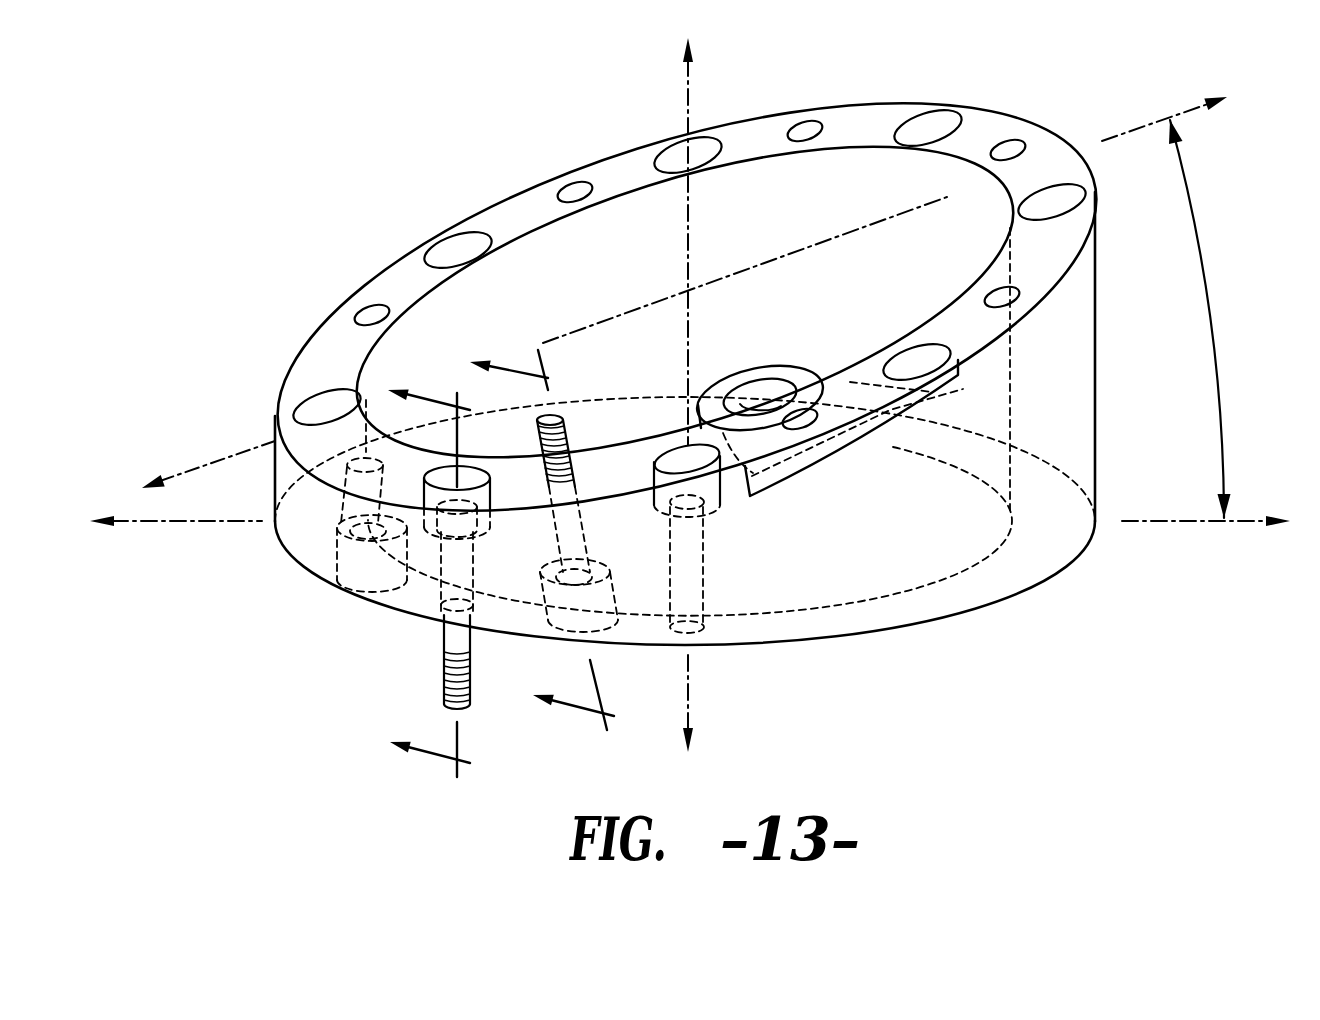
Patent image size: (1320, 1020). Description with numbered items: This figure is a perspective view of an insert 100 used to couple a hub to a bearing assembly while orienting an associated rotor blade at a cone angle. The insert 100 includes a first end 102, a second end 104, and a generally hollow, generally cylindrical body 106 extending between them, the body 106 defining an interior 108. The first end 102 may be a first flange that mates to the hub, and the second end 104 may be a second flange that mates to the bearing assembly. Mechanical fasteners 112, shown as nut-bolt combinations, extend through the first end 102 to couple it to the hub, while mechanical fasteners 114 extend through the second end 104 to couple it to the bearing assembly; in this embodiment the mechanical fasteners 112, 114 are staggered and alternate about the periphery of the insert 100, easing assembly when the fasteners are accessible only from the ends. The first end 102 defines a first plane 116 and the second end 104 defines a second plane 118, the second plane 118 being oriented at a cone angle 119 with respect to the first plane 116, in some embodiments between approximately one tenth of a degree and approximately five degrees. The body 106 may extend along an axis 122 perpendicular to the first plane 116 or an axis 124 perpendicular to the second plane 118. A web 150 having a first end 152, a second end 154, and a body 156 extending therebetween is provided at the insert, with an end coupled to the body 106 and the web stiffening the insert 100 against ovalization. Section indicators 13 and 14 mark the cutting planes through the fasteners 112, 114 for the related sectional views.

The insert 100 is at (642, 333).
The first end 102 is at (303, 567).
The second end 104 is at (397, 283).
The body 106 is at (293, 470).
The interior 108 is at (775, 227).
The mechanical fasteners 112 is at (440, 680).
The mechanical fasteners 114 is at (572, 416).
The first plane 116 is at (1194, 521).
The second plane 118 is at (1128, 134).
The cone angle 119 is at (1210, 308).
The axis 122 is at (690, 680).
The axis 124 is at (696, 100).
The web 150 is at (766, 373).
The first end 152 is at (857, 447).
The second end 154 is at (737, 378).
The body 156 is at (807, 377).
The section line 13- 13 is at (428, 574).
The section line 14- 14 is at (541, 535).